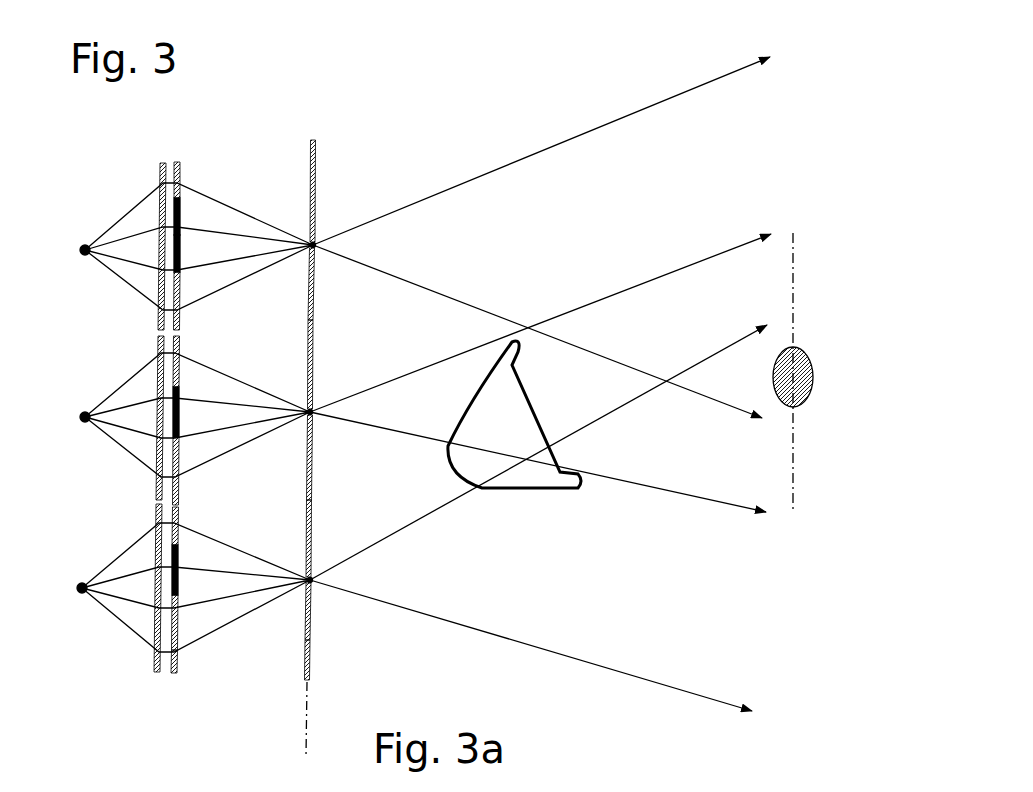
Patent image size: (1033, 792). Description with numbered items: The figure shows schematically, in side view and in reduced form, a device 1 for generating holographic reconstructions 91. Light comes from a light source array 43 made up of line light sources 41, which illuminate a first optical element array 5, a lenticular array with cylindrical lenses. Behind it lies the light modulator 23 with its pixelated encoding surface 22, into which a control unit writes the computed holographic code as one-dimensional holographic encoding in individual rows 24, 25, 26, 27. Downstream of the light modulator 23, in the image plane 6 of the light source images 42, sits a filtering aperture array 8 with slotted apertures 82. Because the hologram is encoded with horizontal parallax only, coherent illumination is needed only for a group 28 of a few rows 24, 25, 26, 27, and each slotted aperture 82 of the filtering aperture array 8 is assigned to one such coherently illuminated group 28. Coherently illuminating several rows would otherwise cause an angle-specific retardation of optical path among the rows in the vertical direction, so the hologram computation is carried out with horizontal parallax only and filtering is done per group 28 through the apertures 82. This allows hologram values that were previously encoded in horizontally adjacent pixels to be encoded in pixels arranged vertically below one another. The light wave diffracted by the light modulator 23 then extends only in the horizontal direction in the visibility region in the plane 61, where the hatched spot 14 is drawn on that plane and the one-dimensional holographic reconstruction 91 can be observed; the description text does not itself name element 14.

In FIG. 3A, the device 1 is at (500, 106).
In FIG. 3, the first optical element array 5 is at (155, 692).
In FIG. 3, the image plane 6 is at (306, 738).
In FIG. 3, the filtering aperture array 8 is at (310, 680).
In FIG. 3A, the light spot 14 is at (812, 352).
In FIG. 3, the pixelated encoding surface 22 is at (178, 659).
In FIG. 3, the light modulator 23 is at (234, 439).
In FIG. 3, the row 24 is at (183, 178).
In FIG. 3, the row 25 is at (183, 222).
In FIG. 3, the row 26 is at (183, 276).
In FIG. 3, the row 27 is at (183, 316).
In FIG. 3, the group of rows 28 is at (234, 365).
In FIG. 3, the line light source 41 is at (82, 245).
In FIG. 3, the light source image 42 is at (318, 240).
In FIG. 3, the light source array 43 is at (82, 672).
In FIG. 3A, the plane 61 is at (798, 291).
In FIG. 3, the slotted aperture 82 is at (317, 254).
In FIG. 3A, the holographic reconstruction 91 is at (514, 414).